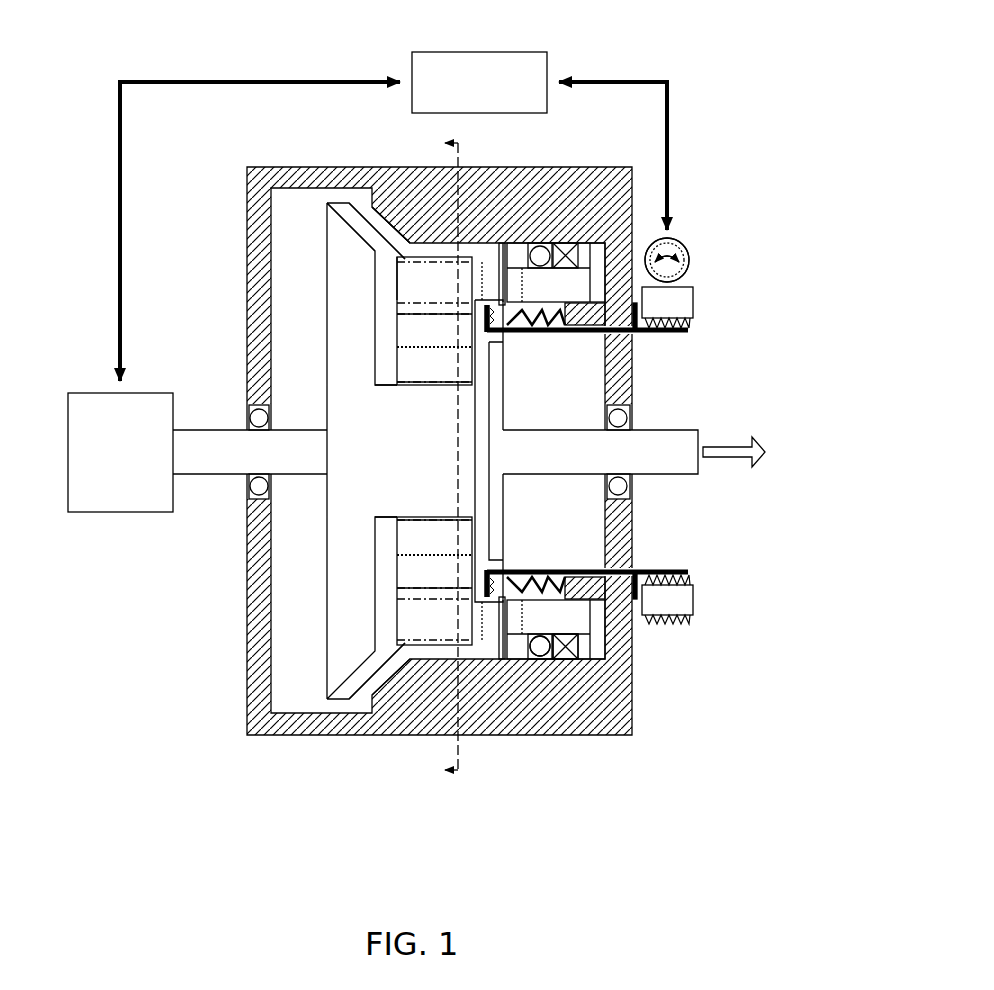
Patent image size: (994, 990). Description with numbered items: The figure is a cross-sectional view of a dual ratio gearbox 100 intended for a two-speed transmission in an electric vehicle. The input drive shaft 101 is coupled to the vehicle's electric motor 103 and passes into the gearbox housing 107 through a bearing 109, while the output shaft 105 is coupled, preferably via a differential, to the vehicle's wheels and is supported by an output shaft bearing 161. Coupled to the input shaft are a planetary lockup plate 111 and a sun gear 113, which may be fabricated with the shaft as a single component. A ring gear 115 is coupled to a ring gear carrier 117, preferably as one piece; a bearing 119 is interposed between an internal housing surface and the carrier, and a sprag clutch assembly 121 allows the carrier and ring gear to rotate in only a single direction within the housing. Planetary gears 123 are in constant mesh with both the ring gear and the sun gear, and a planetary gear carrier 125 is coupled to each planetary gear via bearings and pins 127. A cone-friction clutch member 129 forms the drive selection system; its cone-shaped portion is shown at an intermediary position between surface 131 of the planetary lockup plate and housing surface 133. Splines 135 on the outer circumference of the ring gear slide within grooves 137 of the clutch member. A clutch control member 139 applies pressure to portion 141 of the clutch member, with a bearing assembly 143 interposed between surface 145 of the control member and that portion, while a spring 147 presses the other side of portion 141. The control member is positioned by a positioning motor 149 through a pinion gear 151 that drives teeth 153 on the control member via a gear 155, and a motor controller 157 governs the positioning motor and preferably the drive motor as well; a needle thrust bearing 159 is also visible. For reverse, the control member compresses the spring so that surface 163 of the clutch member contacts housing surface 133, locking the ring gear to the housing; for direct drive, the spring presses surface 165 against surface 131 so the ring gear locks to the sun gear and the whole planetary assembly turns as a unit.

The gearbox 100 is at (158, 777).
The input drive shaft 101 is at (224, 468).
The electric motor 103 is at (118, 513).
The output shaft 105 is at (656, 468).
The gearbox housing 107 is at (272, 172).
The bearing 109 is at (258, 490).
The planetary lockup plate 111 is at (376, 334).
The sun gear 113 is at (444, 462).
The ring gear 115 is at (454, 296).
The ring gear carrier 117 is at (576, 301).
The bearing 119 is at (542, 658).
The sprag clutch assembly 121 is at (580, 658).
The planetary gears 123 is at (454, 342).
The planetary gear carrier 125 is at (496, 386).
The pins 127 is at (420, 348).
The cone-friction clutch member 129 is at (411, 247).
The surface of planetary lockup plate 131 is at (364, 683).
The housing surface 133 is at (389, 666).
The splines 135 is at (400, 268).
The grooves 137 is at (374, 239).
The clutch control member 139 is at (595, 337).
The portion of clutch member 141 is at (527, 243).
The bearing assembly 143 is at (500, 342).
The surface of control member 145 is at (503, 243).
The spring 147 is at (546, 326).
The positioning motor 149 is at (684, 256).
The pinion gear 151 is at (689, 272).
The teeth 153 is at (694, 306).
The gear 155 is at (694, 326).
The motor controller 157 is at (478, 52).
The needle thrust bearing 159 is at (637, 600).
The output shaft bearing 161 is at (620, 487).
The surface of clutch member 163 is at (374, 217).
The surface of clutch member 165 is at (367, 250).